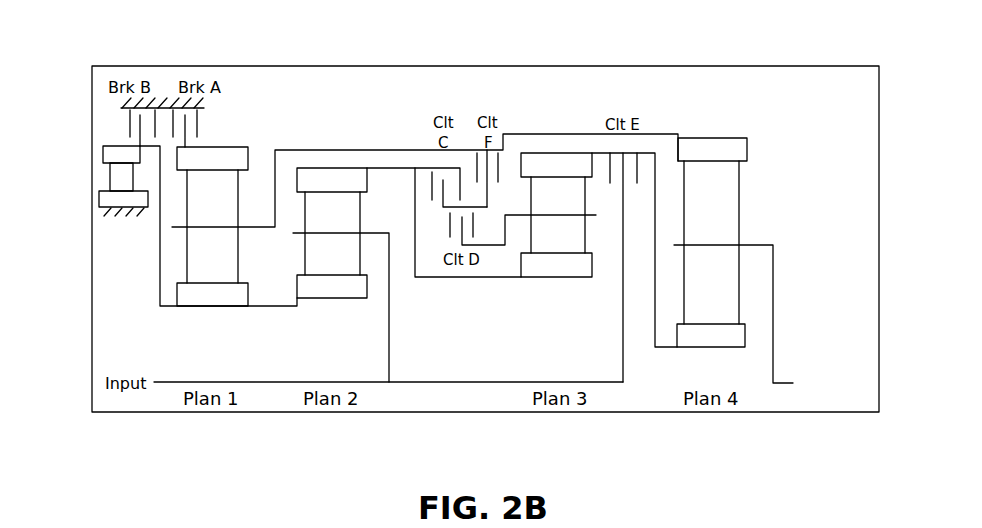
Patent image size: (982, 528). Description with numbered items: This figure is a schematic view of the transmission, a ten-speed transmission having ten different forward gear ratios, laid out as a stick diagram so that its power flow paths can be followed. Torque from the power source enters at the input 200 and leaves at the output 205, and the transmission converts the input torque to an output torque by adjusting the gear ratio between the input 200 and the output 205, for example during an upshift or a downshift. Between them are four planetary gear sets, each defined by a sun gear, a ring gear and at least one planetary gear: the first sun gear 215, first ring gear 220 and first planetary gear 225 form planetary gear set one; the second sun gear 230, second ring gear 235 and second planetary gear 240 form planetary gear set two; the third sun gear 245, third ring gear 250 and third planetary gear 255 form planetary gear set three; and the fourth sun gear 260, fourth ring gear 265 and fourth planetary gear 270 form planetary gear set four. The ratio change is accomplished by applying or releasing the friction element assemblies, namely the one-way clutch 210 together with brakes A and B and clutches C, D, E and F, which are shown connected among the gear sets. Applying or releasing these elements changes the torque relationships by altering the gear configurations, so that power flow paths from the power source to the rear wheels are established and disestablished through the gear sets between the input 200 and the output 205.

The input 200 is at (172, 383).
The output 205 is at (781, 382).
The one-way clutch 210 is at (100, 175).
The first sun gear 215 is at (207, 308).
The first ring gear 220 is at (220, 153).
The first planetary gear 225 is at (213, 227).
The second sun gear 230 is at (330, 298).
The second ring gear 235 is at (333, 175).
The second planetary gear 240 is at (342, 233).
The third sun gear 245 is at (553, 262).
The third ring gear 250 is at (557, 171).
The third planetary gear 255 is at (569, 215).
The fourth sun gear 260 is at (708, 333).
The fourth ring gear 265 is at (707, 150).
The fourth planetary gear 270 is at (708, 245).